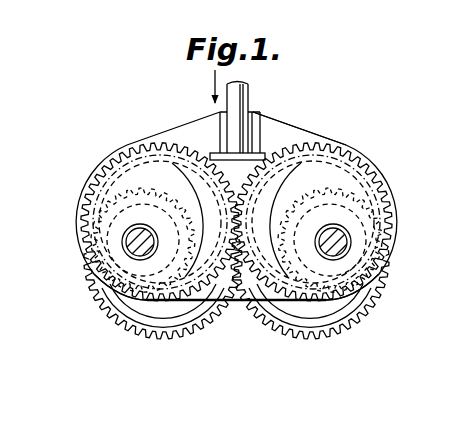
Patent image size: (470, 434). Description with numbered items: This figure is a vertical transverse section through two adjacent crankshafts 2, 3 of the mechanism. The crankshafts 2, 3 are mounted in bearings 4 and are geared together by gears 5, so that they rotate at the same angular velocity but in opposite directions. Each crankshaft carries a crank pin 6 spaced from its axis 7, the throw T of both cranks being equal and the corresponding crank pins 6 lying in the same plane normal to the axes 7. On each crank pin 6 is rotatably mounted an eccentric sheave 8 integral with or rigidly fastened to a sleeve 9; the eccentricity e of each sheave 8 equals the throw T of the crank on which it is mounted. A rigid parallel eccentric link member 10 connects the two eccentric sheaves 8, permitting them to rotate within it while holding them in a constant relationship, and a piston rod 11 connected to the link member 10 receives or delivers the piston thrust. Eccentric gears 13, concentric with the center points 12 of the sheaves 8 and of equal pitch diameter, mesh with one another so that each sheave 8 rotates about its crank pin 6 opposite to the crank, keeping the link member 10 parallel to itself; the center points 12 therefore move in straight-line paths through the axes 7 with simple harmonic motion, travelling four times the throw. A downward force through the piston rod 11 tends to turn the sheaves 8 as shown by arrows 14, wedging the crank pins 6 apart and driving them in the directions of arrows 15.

The crankshaft 2 is at (304, 310).
The crankshaft 3 is at (155, 312).
The bearings 4 is at (185, 319).
The gears 5 is at (252, 306).
The crank pin 6 is at (122, 242).
The axis 7 is at (124, 292).
The eccentric sheave 8 is at (110, 157).
The sleeve 9 is at (81, 208).
The rigid parallel eccentric link member 10 is at (293, 132).
The piston rod 11 is at (248, 96).
The center point 12 is at (162, 216).
The eccentric gear 13 is at (152, 140).
The arrows 14 is at (208, 196).
The arrows 15 is at (97, 188).
The throw T is at (159, 242).
The eccentricity e is at (140, 207).